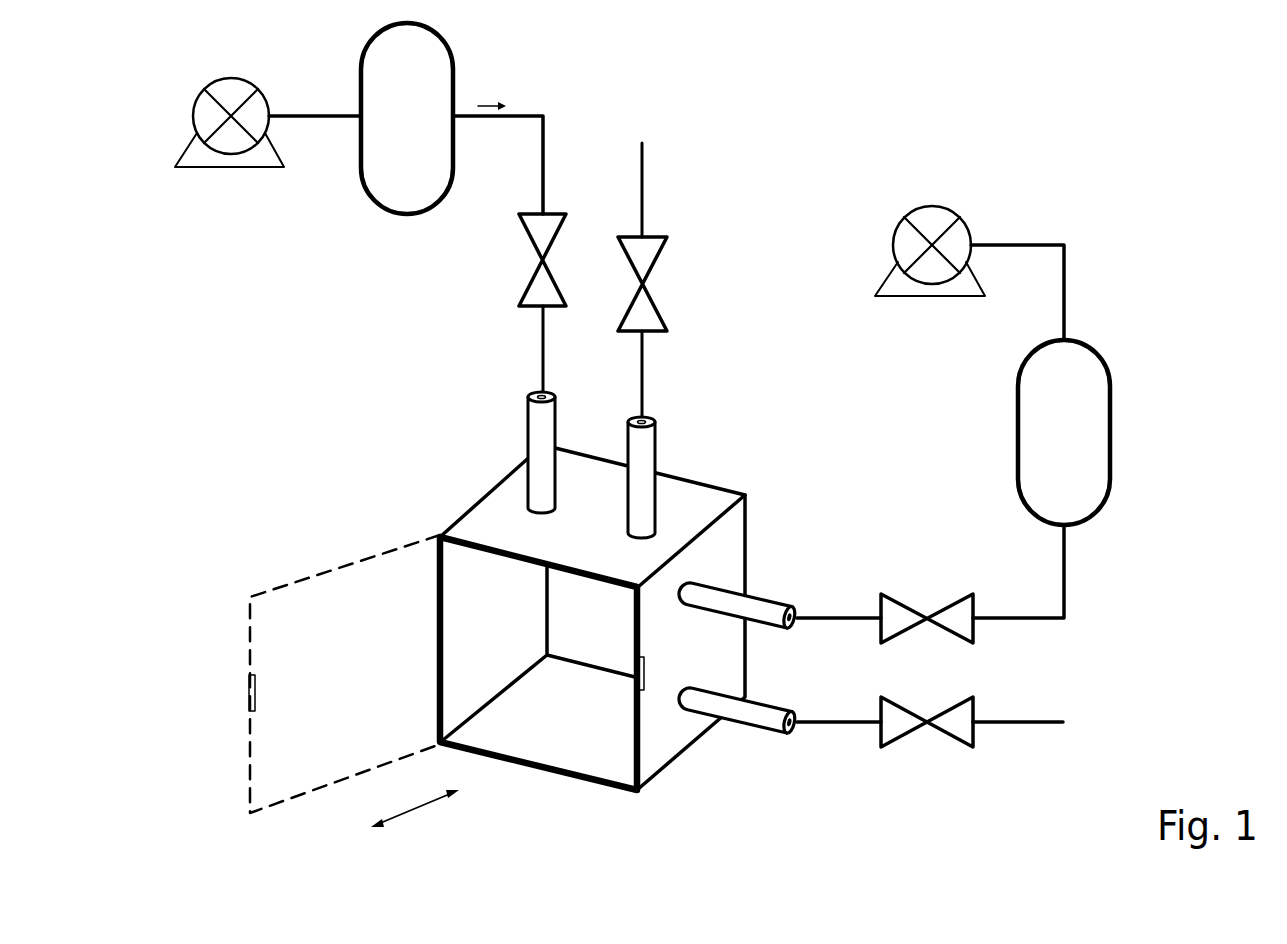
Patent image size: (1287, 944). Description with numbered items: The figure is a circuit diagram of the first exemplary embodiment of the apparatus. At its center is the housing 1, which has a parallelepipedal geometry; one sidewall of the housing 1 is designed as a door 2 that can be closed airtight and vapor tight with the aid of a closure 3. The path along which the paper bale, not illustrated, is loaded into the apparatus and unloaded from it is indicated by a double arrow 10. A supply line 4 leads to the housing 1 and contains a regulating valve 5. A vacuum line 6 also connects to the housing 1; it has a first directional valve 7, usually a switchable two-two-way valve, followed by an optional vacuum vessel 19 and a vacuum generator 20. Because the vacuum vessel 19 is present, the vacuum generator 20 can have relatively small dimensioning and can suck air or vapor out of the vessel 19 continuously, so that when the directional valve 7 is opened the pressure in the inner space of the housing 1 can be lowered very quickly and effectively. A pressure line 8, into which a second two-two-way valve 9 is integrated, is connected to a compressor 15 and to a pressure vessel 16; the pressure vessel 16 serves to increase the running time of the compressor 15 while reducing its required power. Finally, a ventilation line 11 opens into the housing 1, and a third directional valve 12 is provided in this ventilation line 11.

The housing 1 is at (490, 490).
The door 2 is at (340, 567).
The closure 3 is at (247, 697).
The supply line 4 is at (1025, 727).
The regulating valve 5 is at (925, 720).
The vacuum line 6 is at (1028, 620).
The first directional valve 7 is at (925, 613).
The pressure line 8 is at (546, 173).
The second 2/2-way valve 9 is at (540, 258).
The double arrow 10 is at (415, 815).
The ventilation line 11 is at (647, 183).
The third directional valve 12 is at (647, 280).
The compressor 15 is at (192, 110).
The pressure vessel 16 is at (361, 118).
The vacuum vessel 19 is at (1040, 385).
The vacuum generator 20 is at (893, 240).